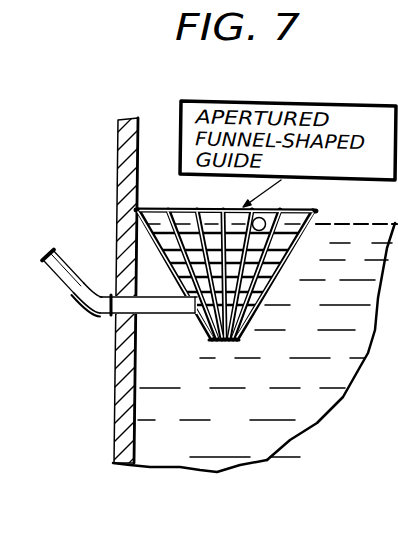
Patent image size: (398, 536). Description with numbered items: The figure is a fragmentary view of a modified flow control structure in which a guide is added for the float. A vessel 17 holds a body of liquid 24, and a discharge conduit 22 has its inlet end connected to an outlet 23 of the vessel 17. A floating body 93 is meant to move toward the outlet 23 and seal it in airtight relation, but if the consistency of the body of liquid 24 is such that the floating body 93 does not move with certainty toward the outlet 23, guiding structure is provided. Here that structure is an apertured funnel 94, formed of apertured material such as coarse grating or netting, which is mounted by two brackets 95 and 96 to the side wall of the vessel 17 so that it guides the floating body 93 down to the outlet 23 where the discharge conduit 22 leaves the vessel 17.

The vessel 17 is at (113, 463).
The discharge conduit 22 is at (48, 268).
The outlet 23 is at (197, 322).
The body of liquid 24 is at (150, 401).
The floating body 93 is at (270, 208).
The apertured funnel 94 is at (306, 233).
The bracket 95 is at (135, 232).
The bracket 96 is at (135, 263).